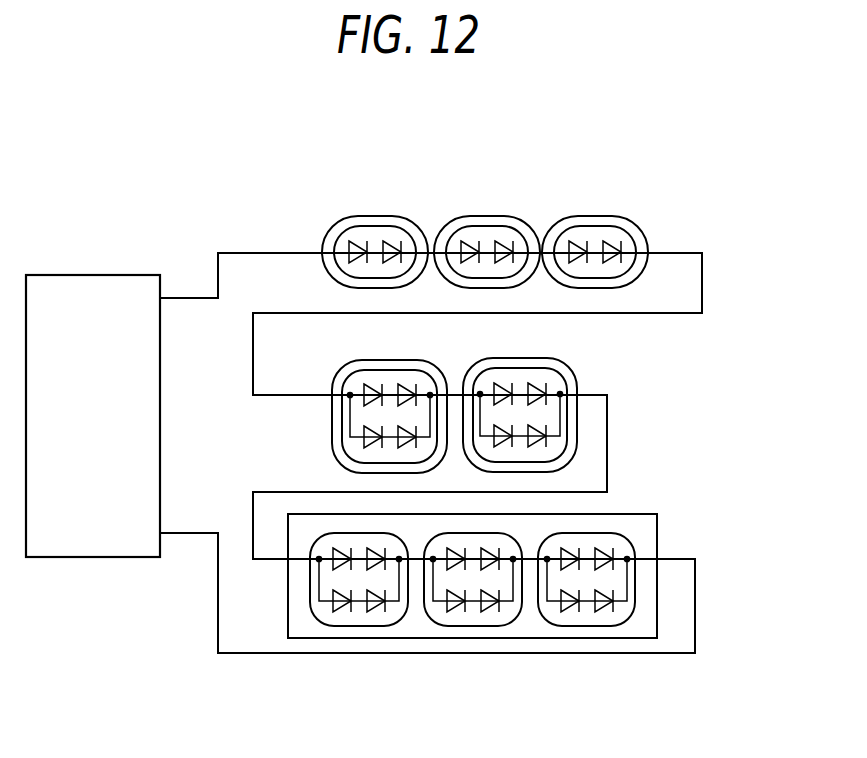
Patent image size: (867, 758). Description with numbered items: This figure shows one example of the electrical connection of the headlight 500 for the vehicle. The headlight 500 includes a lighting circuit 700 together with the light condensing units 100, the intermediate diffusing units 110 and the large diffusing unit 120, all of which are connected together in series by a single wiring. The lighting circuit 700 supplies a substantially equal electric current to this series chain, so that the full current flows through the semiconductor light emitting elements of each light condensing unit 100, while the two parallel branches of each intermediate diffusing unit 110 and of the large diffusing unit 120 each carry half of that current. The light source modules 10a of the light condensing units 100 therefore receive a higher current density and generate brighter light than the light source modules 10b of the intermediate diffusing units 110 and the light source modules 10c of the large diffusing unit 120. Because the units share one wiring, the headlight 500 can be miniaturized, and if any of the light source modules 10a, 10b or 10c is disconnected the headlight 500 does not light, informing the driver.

The headlight for the vehicle 500 is at (121, 143).
The lighting circuit 700 is at (97, 275).
The light source module 10a is at (372, 224).
The light condensing unit 100 is at (388, 217).
The light source module 10b is at (370, 367).
The intermediate diffusing unit 110 is at (440, 366).
The light source module 10c is at (367, 627).
The large diffusing unit 120 is at (657, 532).